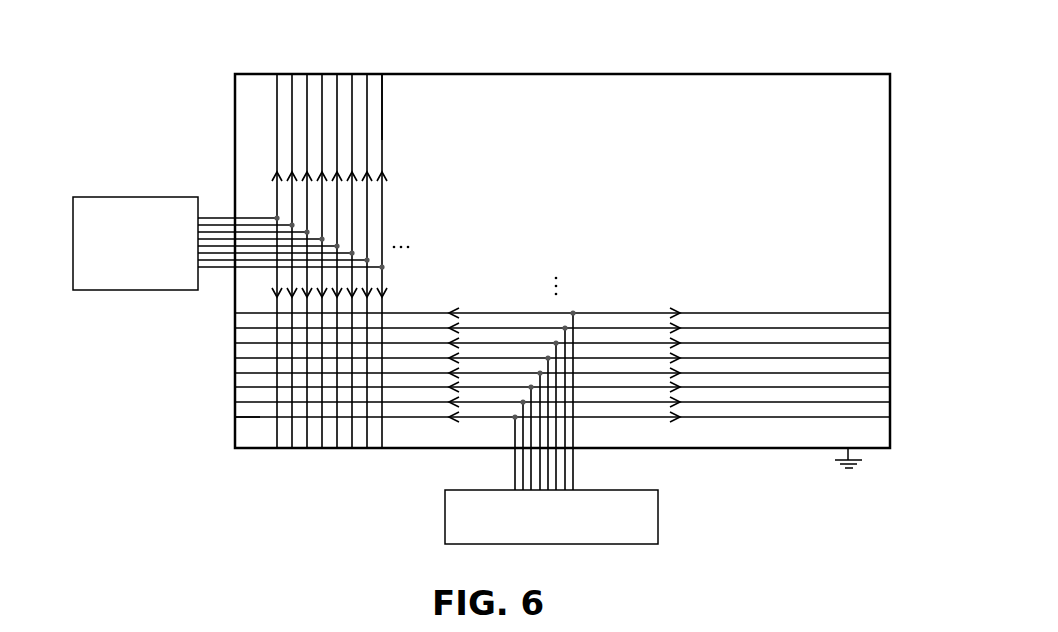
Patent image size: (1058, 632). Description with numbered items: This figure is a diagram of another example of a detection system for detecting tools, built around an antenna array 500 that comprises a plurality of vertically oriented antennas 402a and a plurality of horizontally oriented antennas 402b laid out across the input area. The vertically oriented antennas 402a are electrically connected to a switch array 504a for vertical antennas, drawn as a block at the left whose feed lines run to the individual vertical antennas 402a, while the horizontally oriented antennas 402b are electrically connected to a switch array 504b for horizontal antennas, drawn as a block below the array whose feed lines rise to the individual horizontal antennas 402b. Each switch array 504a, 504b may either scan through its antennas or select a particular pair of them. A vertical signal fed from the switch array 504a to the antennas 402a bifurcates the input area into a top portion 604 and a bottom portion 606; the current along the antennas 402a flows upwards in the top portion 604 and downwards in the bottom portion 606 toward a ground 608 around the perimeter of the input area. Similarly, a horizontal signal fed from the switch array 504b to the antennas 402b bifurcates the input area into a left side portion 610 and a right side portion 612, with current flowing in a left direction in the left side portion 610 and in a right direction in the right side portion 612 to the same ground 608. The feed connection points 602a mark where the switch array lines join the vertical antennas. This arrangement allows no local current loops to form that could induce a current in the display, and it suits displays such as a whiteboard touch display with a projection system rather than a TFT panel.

The vertically oriented antennas 402a is at (279, 104).
The horizontally oriented antennas 402b is at (640, 309).
The antenna array 500 is at (248, 192).
The switch array for vertical antennas 504a is at (112, 200).
The switch array for horizontal antennas 504b is at (445, 536).
The connection points of vertical antennas 602a is at (386, 257).
The top portion 604 is at (385, 136).
The bottom portion 606 is at (270, 296).
The ground 608 is at (620, 73).
The left side portion 610 is at (252, 413).
The right side portion 612 is at (863, 413).